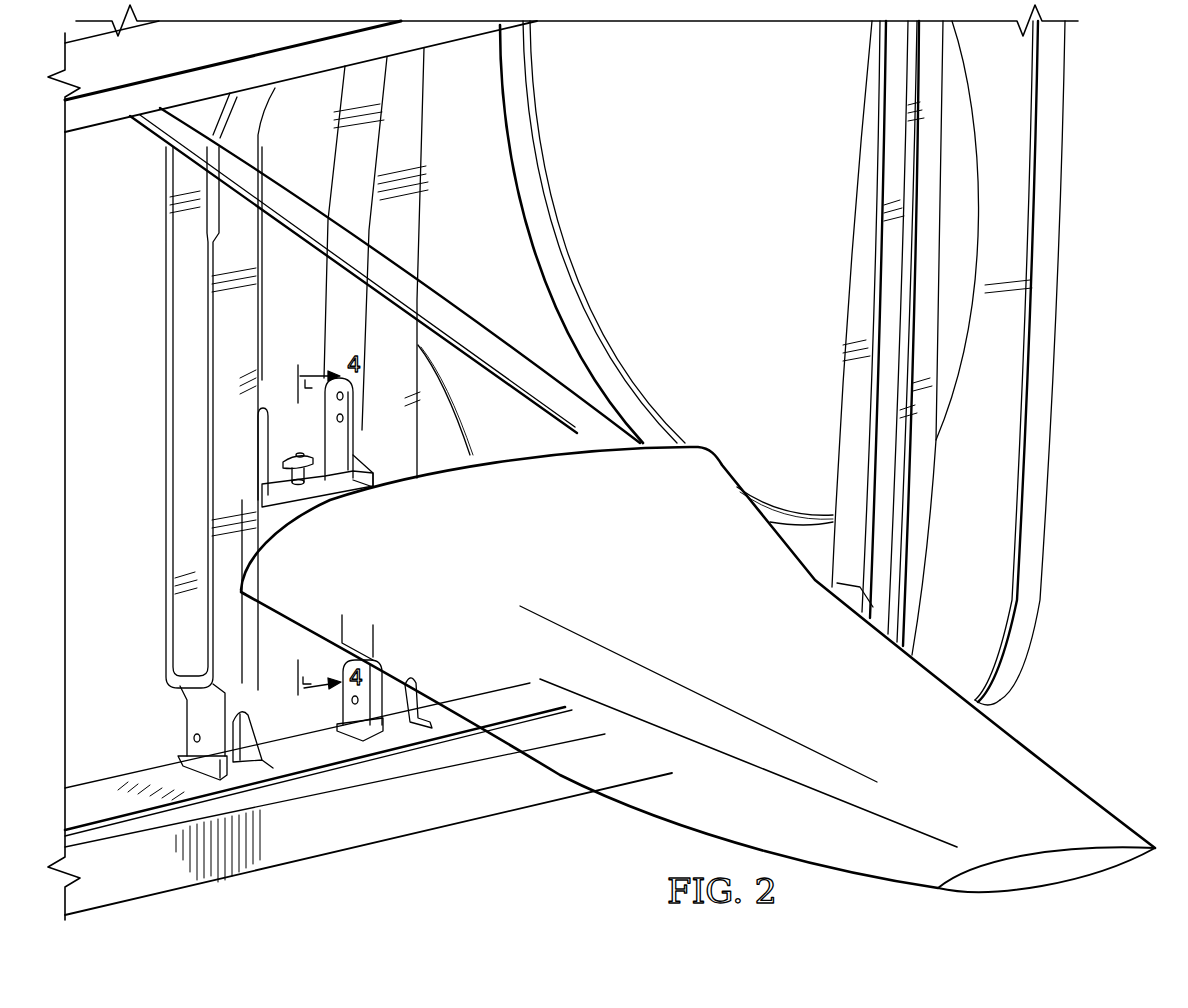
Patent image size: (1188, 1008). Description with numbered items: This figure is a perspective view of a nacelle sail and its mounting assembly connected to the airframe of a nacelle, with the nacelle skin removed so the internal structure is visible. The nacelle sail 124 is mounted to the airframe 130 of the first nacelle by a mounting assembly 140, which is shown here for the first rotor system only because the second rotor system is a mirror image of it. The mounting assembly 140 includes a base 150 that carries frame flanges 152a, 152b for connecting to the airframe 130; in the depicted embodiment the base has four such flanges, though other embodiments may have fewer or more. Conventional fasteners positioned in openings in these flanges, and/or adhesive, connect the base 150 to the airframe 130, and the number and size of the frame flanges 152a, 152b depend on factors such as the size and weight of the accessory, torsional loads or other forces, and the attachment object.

The nacelle sail 124 is at (1072, 795).
The airframe 130 is at (158, 514).
The mounting assembly 140 is at (290, 328).
The base 150 is at (394, 478).
The frame flange 152a is at (267, 425).
The frame flange 152b is at (357, 433).